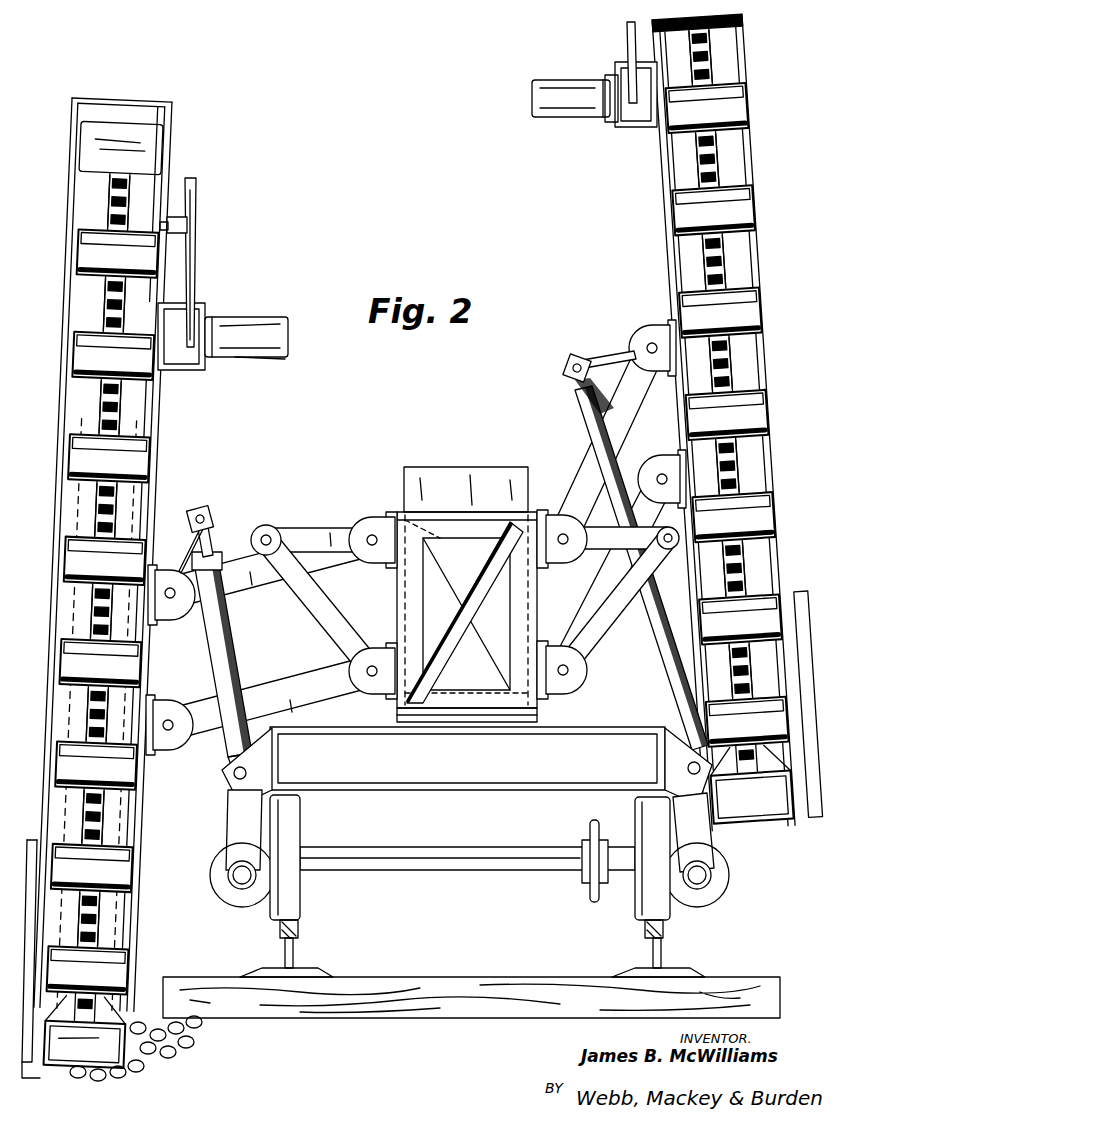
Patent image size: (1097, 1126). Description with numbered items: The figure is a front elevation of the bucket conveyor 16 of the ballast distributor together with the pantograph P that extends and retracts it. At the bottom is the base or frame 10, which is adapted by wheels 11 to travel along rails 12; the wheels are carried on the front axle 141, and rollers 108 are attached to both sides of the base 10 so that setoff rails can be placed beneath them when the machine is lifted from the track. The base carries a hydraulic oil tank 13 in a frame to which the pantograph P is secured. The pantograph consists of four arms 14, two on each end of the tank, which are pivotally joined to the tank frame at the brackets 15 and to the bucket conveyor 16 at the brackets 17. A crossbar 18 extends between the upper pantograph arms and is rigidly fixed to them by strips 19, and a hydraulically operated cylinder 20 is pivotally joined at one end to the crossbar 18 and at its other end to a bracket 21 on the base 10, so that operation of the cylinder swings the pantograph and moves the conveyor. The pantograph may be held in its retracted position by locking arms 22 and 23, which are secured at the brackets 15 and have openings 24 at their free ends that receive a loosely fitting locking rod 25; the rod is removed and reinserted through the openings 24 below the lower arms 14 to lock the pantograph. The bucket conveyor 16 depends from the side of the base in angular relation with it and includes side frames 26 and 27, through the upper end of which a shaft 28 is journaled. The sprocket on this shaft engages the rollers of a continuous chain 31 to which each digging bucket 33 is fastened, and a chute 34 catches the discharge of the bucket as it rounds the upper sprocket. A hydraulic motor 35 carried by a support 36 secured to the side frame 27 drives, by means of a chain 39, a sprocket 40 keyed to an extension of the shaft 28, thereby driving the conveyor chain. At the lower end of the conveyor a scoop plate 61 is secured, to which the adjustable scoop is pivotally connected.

The base or frame 10 is at (548, 793).
The wheels 11 is at (294, 836).
The rails 12 is at (293, 950).
The hydraulic oil tank 13 is at (480, 679).
The pantograph arms 14 is at (196, 602).
The brackets 15 is at (376, 524).
The bucket conveyor 16 is at (62, 606).
The brackets 17 is at (176, 576).
The crossbar 18 is at (206, 520).
The strips 19 is at (212, 540).
The hydraulically operated cylinder 20 is at (233, 686).
The bracket 21 is at (234, 786).
The locking arm 22 is at (340, 534).
The locking arm 23 is at (324, 628).
The openings 24 is at (263, 536).
The locking rod 25 is at (664, 526).
The side frame 26 is at (76, 690).
The side frame 27 is at (118, 808).
The shaft 28 is at (100, 222).
The continuous chain 31 is at (102, 300).
The digging bucket 33 is at (137, 466).
The chute 34 is at (70, 115).
The hydraulic motor 35 is at (278, 322).
The support 36 is at (195, 375).
The chain 39 is at (195, 283).
The sprocket 40 is at (188, 210).
The scoop plate 61 is at (810, 822).
The rollers 108 is at (222, 893).
The front axle 141 is at (514, 846).
The pantograph P is at (372, 604).